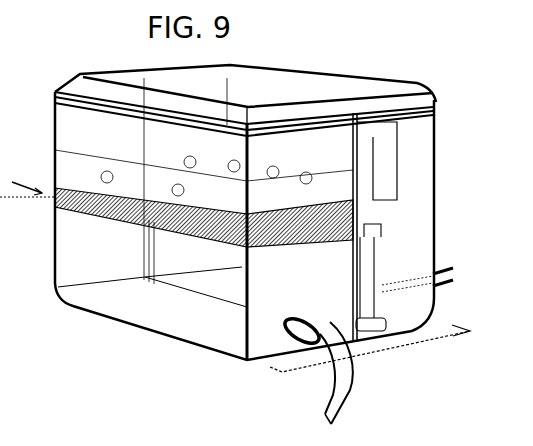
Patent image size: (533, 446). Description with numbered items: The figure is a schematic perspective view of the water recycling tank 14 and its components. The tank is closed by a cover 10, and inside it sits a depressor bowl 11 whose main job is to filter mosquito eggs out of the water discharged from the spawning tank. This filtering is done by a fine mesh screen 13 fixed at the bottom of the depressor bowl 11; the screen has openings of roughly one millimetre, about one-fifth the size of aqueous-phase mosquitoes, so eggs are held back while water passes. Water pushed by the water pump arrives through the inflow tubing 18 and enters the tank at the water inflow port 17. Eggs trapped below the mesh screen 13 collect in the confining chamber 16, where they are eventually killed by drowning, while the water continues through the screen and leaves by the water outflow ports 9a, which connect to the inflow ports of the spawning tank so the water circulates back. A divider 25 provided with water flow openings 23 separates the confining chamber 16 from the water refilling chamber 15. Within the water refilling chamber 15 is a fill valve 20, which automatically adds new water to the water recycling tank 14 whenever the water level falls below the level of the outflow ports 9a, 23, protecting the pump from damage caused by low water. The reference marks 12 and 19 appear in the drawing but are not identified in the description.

The water outflow port 9a is at (58, 198).
The cover 10 is at (250, 66).
The depressor bowl 11 is at (72, 118).
The rim 12 is at (27, 181).
The mesh screen 13 is at (142, 214).
The water recycling tank 14 is at (388, 349).
The water refilling chamber 15 is at (403, 247).
The confining chamber 16 is at (137, 308).
The water inflow port 17 is at (284, 330).
The inflow tubing 18 is at (337, 386).
The hook 19 is at (450, 277).
The fill valve 20 is at (370, 207).
The water flow opening 23 is at (3, 150).
The divider 25 is at (342, 340).